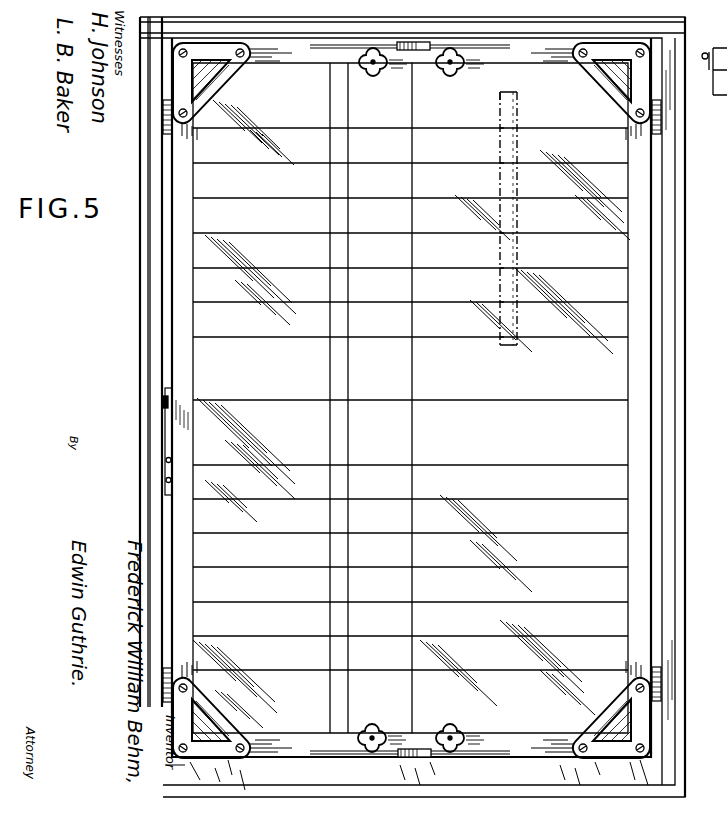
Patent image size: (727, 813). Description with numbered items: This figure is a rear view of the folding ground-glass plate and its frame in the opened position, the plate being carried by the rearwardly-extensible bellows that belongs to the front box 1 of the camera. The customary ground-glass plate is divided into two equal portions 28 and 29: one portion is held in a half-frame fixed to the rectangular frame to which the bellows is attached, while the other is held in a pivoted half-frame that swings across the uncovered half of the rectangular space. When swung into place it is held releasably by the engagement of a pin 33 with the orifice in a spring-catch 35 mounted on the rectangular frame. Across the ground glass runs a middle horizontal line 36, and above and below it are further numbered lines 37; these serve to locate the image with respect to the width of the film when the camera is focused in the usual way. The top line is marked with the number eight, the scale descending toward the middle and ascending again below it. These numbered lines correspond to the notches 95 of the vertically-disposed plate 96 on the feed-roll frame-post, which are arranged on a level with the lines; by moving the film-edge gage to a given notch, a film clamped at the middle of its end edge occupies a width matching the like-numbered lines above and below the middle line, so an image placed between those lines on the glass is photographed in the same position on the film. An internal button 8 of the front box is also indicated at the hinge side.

The front box 1 is at (685, 17).
The buttons 8 is at (168, 133).
The ground-glass plate portion 28 is at (302, 398).
The ground-glass plate portion 29 is at (520, 398).
The pin 33 is at (164, 401).
The spring-catch 35 is at (169, 414).
The middle horizontal line 36 is at (293, 402).
The lines 37 is at (432, 233).
The notches 95 is at (500, 130).
The vertically-disposed plate 96 is at (500, 318).